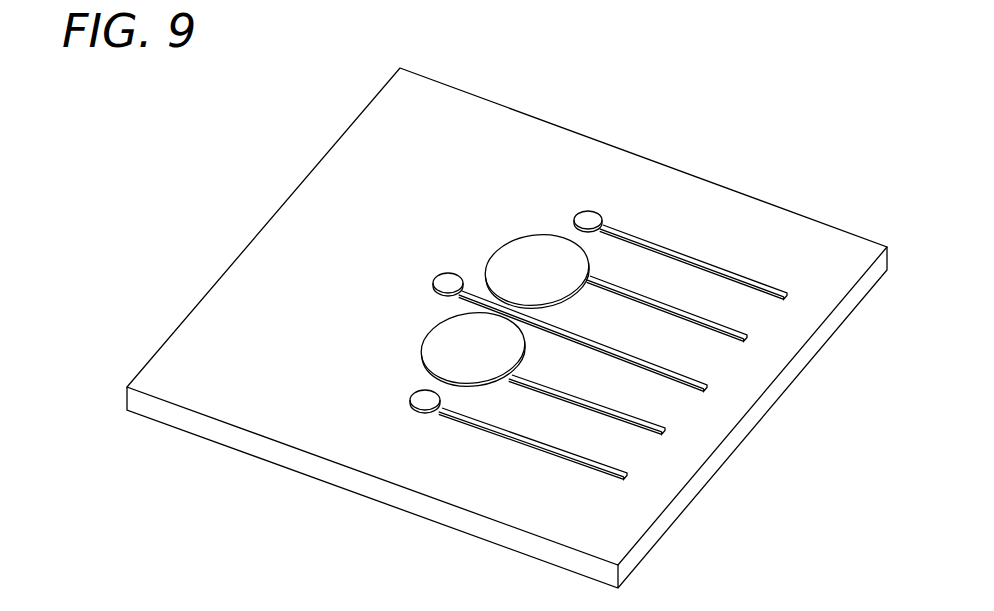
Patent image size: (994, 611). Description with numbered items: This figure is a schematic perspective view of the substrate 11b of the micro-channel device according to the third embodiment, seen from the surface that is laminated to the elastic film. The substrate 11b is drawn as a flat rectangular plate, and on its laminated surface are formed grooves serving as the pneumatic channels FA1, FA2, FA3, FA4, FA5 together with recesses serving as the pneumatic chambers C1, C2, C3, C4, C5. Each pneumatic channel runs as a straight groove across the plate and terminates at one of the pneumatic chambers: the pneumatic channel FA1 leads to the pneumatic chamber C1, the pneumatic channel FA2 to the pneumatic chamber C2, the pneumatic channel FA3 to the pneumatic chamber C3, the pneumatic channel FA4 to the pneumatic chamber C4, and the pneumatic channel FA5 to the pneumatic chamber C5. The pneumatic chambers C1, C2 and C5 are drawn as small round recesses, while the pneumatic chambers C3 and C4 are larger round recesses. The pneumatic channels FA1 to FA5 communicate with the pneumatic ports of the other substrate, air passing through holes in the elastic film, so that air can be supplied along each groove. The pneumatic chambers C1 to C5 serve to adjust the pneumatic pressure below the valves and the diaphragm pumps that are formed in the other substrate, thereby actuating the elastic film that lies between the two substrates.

The substrate 11b is at (607, 147).
The pneumatic chamber C1 is at (418, 397).
The pneumatic chamber C2 is at (583, 220).
The pneumatic chamber C3 is at (428, 345).
The pneumatic chamber C4 is at (514, 262).
The pneumatic chamber C5 is at (436, 283).
The pneumatic channel FA1 is at (529, 438).
The pneumatic channel FA2 is at (703, 262).
The pneumatic channel FA3 is at (581, 398).
The pneumatic channel FA4 is at (663, 303).
The pneumatic channel FA5 is at (615, 348).